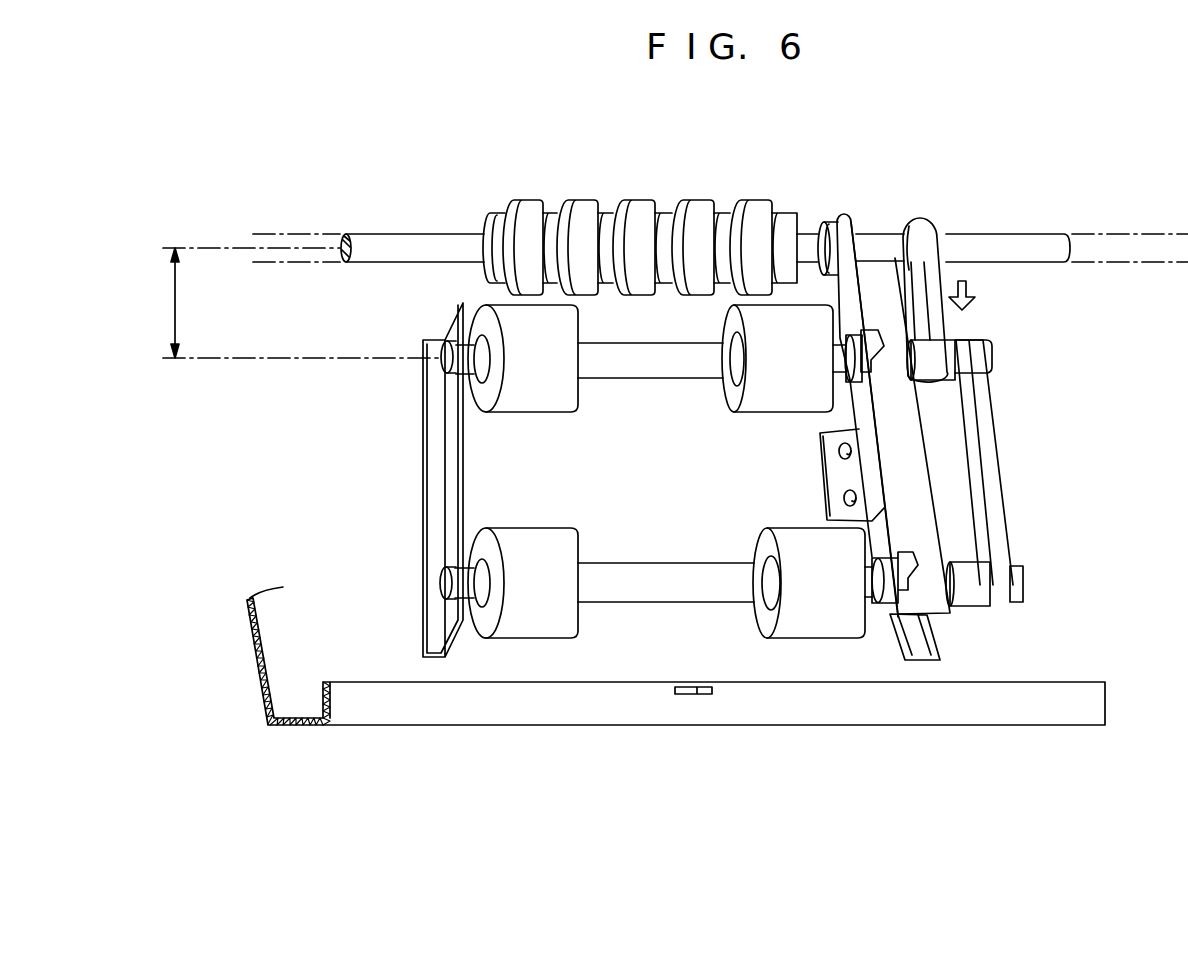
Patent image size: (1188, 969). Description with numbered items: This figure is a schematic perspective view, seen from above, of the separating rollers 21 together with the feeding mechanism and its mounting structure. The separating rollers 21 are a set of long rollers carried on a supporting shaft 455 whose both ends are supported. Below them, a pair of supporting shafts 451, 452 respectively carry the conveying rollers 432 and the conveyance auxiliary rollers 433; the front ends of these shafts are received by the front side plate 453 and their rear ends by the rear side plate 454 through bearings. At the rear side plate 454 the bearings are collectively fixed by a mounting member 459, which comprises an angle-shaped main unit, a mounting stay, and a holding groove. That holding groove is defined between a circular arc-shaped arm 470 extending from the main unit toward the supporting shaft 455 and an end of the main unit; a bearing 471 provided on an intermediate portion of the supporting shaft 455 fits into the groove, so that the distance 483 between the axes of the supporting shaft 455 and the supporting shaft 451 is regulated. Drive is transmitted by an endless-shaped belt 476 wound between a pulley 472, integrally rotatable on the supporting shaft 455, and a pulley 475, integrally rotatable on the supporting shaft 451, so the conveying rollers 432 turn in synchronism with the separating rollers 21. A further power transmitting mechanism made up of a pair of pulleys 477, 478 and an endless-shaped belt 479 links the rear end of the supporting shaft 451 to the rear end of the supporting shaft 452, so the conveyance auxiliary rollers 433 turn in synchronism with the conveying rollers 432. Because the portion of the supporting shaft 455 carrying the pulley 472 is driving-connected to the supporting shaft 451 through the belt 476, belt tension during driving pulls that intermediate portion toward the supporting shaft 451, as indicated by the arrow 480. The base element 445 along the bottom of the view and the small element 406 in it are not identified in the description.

The separating rollers 21 is at (644, 213).
The slot 406 is at (697, 697).
The conveying rollers 432 is at (535, 388).
The conveyance auxiliary rollers 433 is at (528, 610).
The base plate 445 is at (387, 707).
The supporting shaft 451 is at (657, 358).
The supporting shaft 452 is at (643, 583).
The front side plate 453 is at (453, 468).
The rear side plate 454 is at (935, 643).
The supporting shaft 455 is at (1032, 244).
The mounting member 459 is at (910, 468).
The circular arc-shaped arm 470 is at (846, 221).
The bearing 471 is at (835, 228).
The pulley 472 is at (940, 243).
The pulley 475 is at (955, 337).
The endless-shaped belt 476 is at (937, 323).
The pulley 477 is at (992, 358).
The pulley 478 is at (1027, 580).
The endless-shaped belt 479 is at (995, 512).
The arrow 480 is at (958, 282).
The distance 483 is at (172, 300).